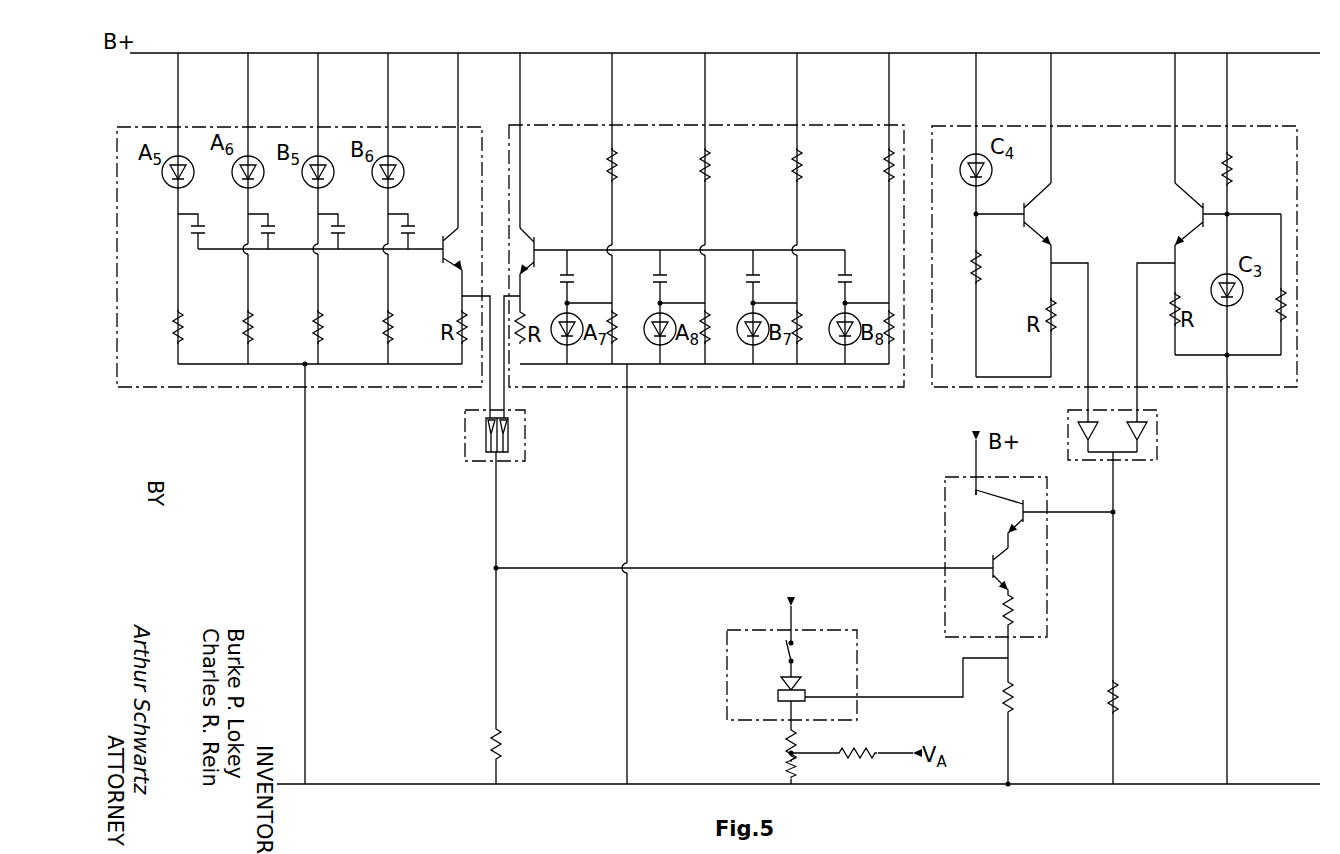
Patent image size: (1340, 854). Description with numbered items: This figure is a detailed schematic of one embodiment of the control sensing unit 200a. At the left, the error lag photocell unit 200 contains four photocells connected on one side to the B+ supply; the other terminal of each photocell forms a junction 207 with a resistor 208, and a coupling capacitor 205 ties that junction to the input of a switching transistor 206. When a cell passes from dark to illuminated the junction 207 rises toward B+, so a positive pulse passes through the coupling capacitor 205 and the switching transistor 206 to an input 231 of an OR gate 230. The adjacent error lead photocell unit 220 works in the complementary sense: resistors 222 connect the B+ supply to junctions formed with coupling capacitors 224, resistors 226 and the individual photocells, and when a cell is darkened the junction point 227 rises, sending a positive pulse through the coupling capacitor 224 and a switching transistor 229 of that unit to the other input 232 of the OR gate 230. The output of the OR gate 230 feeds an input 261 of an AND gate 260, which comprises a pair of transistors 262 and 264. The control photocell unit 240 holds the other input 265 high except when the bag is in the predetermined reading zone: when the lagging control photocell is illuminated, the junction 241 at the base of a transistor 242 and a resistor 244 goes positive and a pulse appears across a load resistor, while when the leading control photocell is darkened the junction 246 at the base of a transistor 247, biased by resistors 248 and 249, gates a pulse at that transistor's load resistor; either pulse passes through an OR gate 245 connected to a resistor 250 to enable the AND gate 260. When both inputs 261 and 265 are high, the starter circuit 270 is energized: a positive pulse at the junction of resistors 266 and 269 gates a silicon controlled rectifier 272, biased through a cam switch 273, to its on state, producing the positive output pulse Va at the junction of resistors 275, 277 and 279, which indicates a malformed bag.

The error lag photocell unit 200 is at (248, 388).
The control sensing unit 200a is at (770, 97).
The coupling capacitor 205 is at (450, 199).
The switching transistor 206 is at (451, 269).
The junction 207 is at (178, 214).
The resistor 208 is at (384, 332).
The error lead photocell unit 220 is at (790, 388).
The resistor 222 is at (616, 185).
The coupling capacitor 224 is at (714, 276).
The resistor 226 is at (617, 325).
The junction point 227 is at (567, 303).
The transistor 229 is at (534, 241).
The OR gate 230 is at (526, 440).
The input 231 is at (489, 400).
The input 232 is at (506, 398).
The control photocell unit 240 is at (957, 126).
The junction 241 is at (976, 222).
The transistor 242 is at (1015, 210).
The resistor 244 is at (978, 280).
The OR gate 245 is at (1157, 450).
The junction 246 is at (1228, 212).
The transistor 247 is at (1212, 170).
The resistor 248 is at (1229, 167).
The resistor 249 is at (1282, 328).
The resistor 250 is at (1118, 688).
The AND gate 260 is at (945, 499).
The input 261 is at (890, 570).
The transistor 262 is at (1036, 512).
The transistor 264 is at (1018, 570).
The input 265 is at (1072, 512).
The resistor 266 is at (1004, 616).
The resistor 269 is at (1014, 686).
The starter circuit 270 is at (725, 630).
The silicon controlled rectifier 272 is at (799, 688).
The cam switch 273 is at (786, 655).
The resistor 275 is at (788, 738).
The resistor 277 is at (786, 768).
The resistor 279 is at (860, 748).